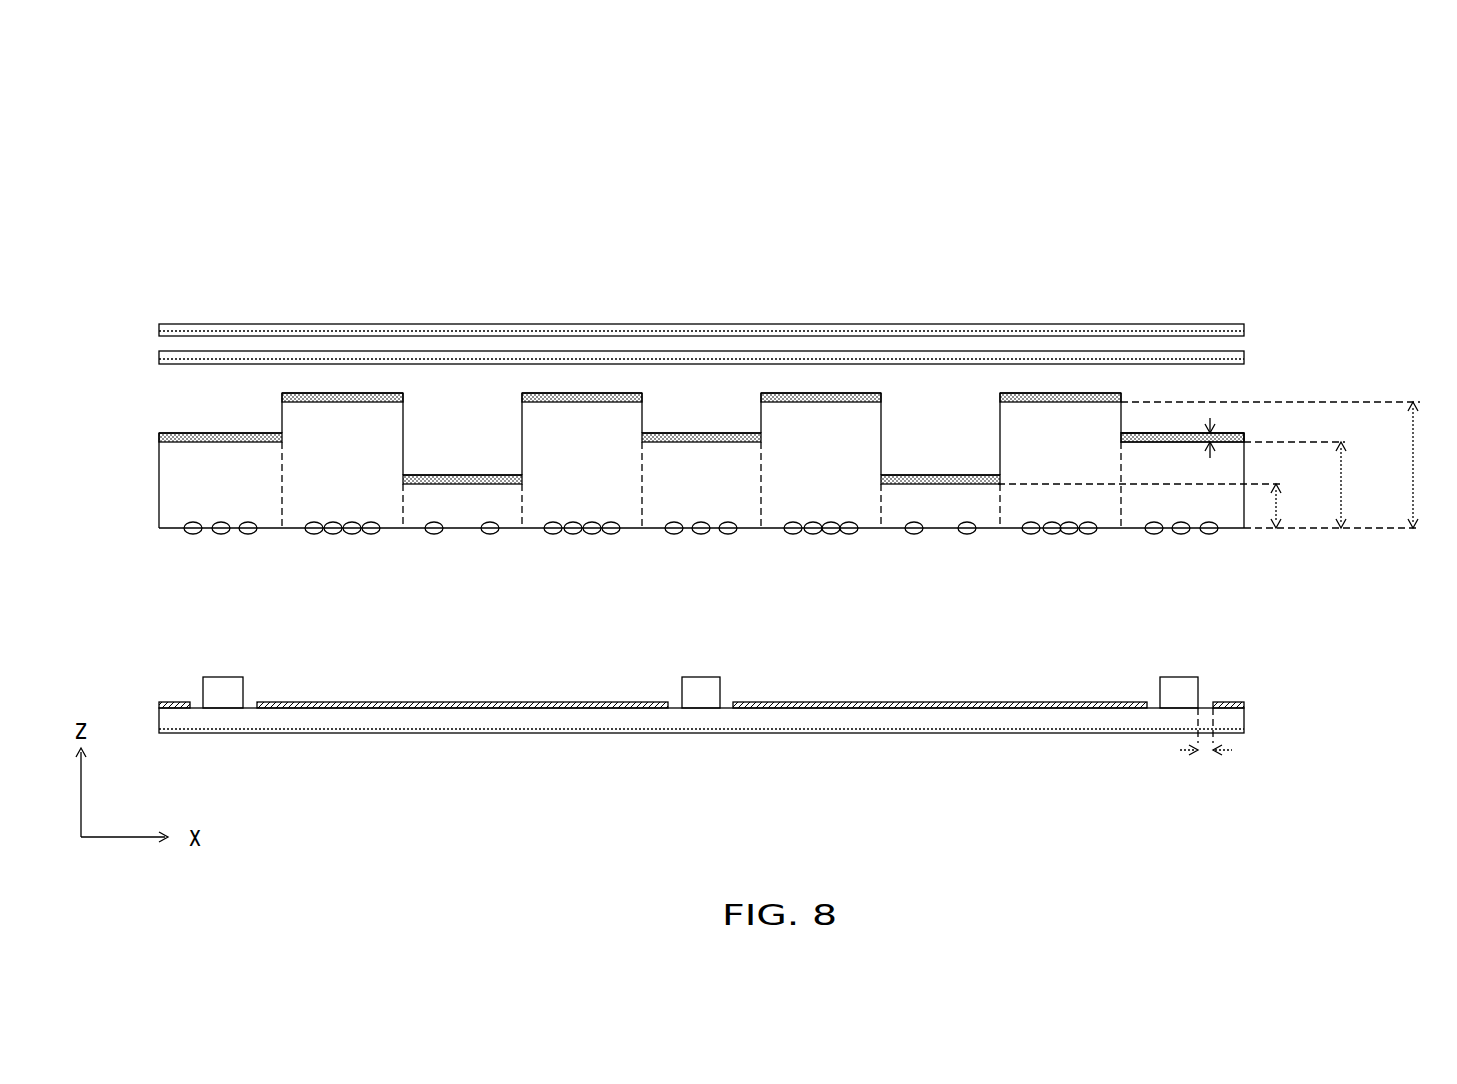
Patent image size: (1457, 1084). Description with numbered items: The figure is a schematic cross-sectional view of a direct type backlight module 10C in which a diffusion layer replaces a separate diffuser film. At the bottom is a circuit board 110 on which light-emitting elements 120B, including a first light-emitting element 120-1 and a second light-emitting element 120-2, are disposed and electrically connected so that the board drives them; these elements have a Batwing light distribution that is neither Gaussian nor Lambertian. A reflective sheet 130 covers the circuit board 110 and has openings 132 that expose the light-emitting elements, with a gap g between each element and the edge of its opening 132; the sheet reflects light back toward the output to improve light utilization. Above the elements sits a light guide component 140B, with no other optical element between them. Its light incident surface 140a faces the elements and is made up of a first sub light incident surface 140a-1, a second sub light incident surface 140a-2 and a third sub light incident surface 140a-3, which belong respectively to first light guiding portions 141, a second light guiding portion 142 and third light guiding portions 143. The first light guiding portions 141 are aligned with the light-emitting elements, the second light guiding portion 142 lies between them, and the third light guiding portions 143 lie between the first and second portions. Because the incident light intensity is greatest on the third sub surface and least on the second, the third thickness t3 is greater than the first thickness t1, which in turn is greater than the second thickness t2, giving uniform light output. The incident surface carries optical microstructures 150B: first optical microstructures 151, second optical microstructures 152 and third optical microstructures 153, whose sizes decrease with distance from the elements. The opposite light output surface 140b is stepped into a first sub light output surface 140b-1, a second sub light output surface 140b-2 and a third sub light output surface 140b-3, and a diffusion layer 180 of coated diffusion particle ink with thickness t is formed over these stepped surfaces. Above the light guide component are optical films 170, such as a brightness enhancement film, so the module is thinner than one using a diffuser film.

The backlight module 10C is at (1387, 838).
The circuit board 110 is at (1230, 721).
The light-emitting elements 120B is at (413, 78).
The first light-emitting element 120-1 is at (1168, 690).
The second light-emitting element 120-2 is at (692, 690).
The reflective sheet 130 is at (1243, 705).
The opening 132 is at (1213, 700).
The light guide component 140B is at (601, 78).
The first light guiding portion 141 is at (1173, 453).
The second light guiding portion 142 is at (971, 500).
The third light guiding portion 143 is at (1085, 417).
The light incident surface 140a is at (797, 78).
The first sub light incident surface 140a-1 is at (1235, 573).
The second sub light incident surface 140a-2 is at (993, 573).
The third sub light incident surface 140a-3 is at (1112, 573).
The light output surface 140b is at (1021, 78).
The first sub light output surface 140b-1 is at (668, 432).
The second sub light output surface 140b-2 is at (923, 473).
The third sub light output surface 140b-3 is at (787, 392).
The optical microstructures 150B is at (1229, 78).
The first optical microstructures 151 is at (700, 550).
The second optical microstructures 152 is at (917, 550).
The third optical microstructures 153 is at (818, 550).
The optical film 170 is at (1222, 357).
The diffusion layer 180 is at (1233, 434).
The thickness t is at (1207, 441).
The first thickness t1 is at (1308, 485).
The second thickness t2 is at (1209, 506).
The third thickness t3 is at (1284, 465).
The gap g is at (1206, 767).